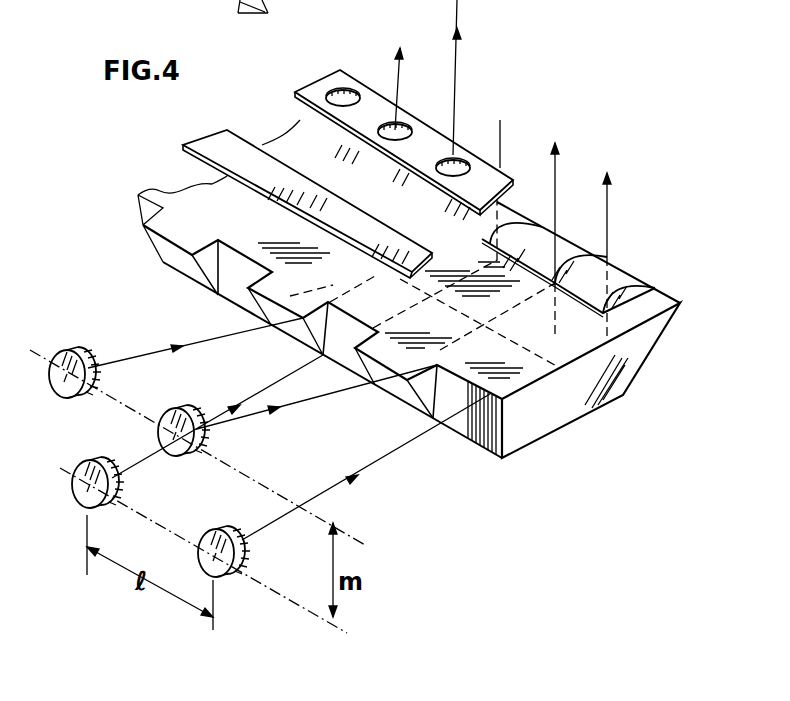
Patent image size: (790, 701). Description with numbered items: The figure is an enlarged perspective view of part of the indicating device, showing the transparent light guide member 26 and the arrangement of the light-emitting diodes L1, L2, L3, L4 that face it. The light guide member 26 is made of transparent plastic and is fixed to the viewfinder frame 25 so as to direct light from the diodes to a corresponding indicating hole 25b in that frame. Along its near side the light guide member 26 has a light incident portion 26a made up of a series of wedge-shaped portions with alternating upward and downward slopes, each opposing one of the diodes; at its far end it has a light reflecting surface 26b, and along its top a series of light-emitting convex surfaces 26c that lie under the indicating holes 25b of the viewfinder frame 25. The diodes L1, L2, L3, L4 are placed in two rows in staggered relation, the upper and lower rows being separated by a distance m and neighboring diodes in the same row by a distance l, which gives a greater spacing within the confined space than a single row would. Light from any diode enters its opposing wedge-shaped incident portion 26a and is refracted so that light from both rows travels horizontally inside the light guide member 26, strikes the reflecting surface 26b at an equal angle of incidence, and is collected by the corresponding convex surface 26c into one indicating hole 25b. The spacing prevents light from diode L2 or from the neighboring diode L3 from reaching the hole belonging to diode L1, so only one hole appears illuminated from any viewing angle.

The viewfinder frame 25 is at (207, 138).
The indicating hole 25b is at (343, 92).
The light guide member 26 is at (558, 432).
The light incident portion 26a is at (346, 357).
The light reflecting surface 26b is at (618, 386).
The light-emitting convex surface 26c is at (527, 213).
The light-emitting diode L1 is at (244, 557).
The light-emitting diode L2 is at (208, 446).
The light-emitting diode L3 is at (118, 490).
The light-emitting diode L4 is at (90, 354).